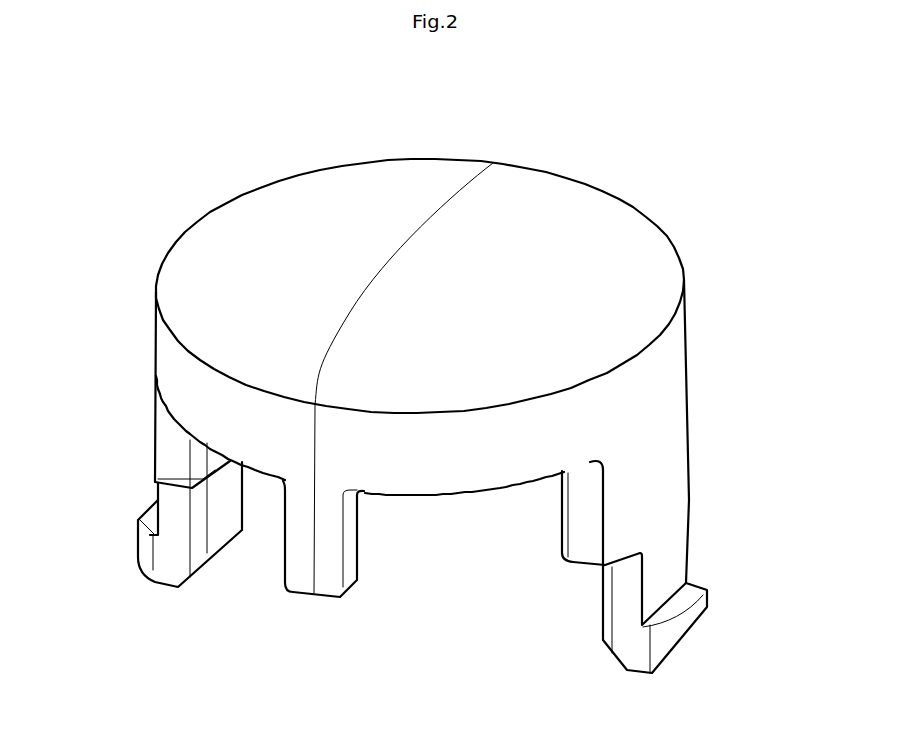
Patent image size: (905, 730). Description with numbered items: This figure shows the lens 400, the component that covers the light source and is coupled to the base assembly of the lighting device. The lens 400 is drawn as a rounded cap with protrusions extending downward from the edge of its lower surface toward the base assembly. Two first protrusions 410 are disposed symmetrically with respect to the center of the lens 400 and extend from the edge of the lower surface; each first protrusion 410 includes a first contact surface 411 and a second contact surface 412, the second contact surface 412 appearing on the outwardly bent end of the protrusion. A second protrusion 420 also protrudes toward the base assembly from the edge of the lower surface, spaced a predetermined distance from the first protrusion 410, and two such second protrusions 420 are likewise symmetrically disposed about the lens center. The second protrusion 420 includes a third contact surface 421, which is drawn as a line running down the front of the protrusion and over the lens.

The lens 400 is at (428, 376).
The first protrusion 410 is at (167, 443).
The first contact surface 411 is at (155, 500).
The second contact surface 412 is at (137, 517).
The second protrusion 420 is at (300, 550).
The third contact surface 421 is at (314, 597).